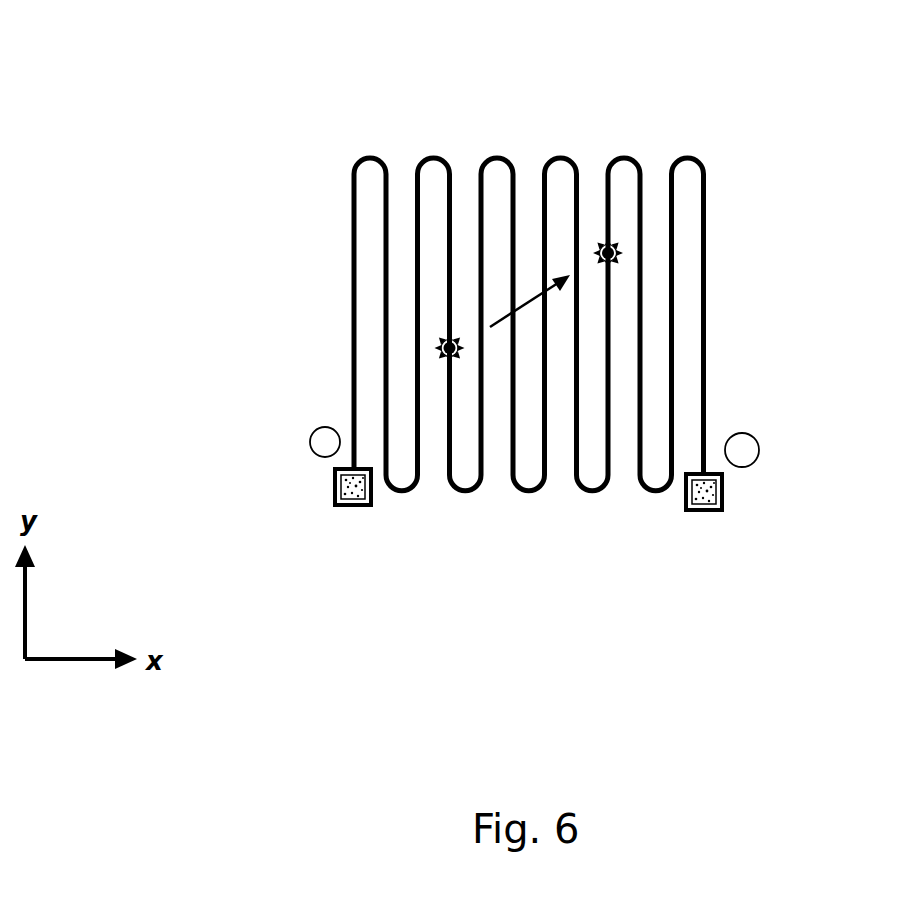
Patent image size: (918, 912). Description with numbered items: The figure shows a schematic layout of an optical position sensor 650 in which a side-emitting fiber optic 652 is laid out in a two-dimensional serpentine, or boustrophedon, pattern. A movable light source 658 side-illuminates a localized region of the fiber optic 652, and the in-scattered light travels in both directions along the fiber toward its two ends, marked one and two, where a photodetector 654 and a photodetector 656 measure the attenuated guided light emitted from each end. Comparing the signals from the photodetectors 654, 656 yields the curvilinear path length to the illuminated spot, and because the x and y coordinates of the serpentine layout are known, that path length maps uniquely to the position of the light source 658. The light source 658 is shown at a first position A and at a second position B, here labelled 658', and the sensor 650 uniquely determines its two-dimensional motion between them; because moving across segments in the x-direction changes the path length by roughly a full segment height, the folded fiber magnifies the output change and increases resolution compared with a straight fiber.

The optical position sensor 650 is at (150, 80).
The side-emitting fiber optic 652 is at (713, 207).
The photodetector 654 is at (337, 511).
The photodetector 656 is at (731, 519).
The light source 658 is at (362, 319).
The defect location B 658' is at (710, 277).